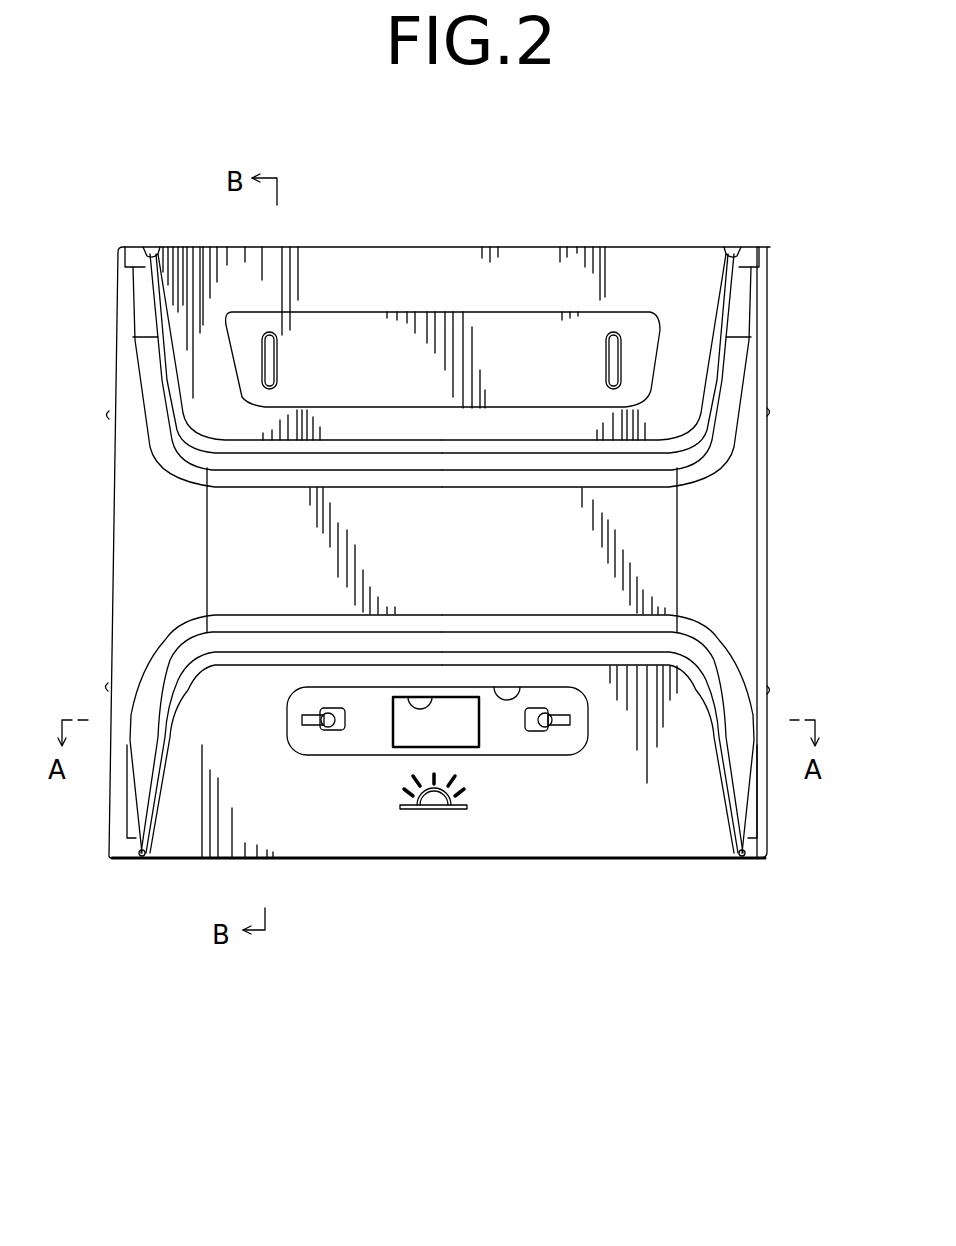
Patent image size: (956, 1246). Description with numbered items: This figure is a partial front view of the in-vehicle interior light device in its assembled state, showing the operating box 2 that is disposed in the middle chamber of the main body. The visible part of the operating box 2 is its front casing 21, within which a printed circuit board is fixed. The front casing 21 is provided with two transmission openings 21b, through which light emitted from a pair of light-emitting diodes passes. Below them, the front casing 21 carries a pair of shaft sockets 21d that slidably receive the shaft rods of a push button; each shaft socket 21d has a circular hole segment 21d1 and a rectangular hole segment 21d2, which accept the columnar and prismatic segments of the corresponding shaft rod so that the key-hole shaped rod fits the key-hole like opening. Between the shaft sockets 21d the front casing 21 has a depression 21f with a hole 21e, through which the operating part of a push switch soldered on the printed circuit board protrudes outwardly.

The operating box 2 is at (735, 221).
The front casing 21 is at (727, 552).
The transmission opening 21b is at (270, 332).
The shaft socket 21d is at (460, 811).
The circular hole segment 21d1 is at (323, 727).
The rectangular hole segment 21d2 is at (303, 727).
The hole 21e is at (435, 697).
The depression 21f is at (512, 700).